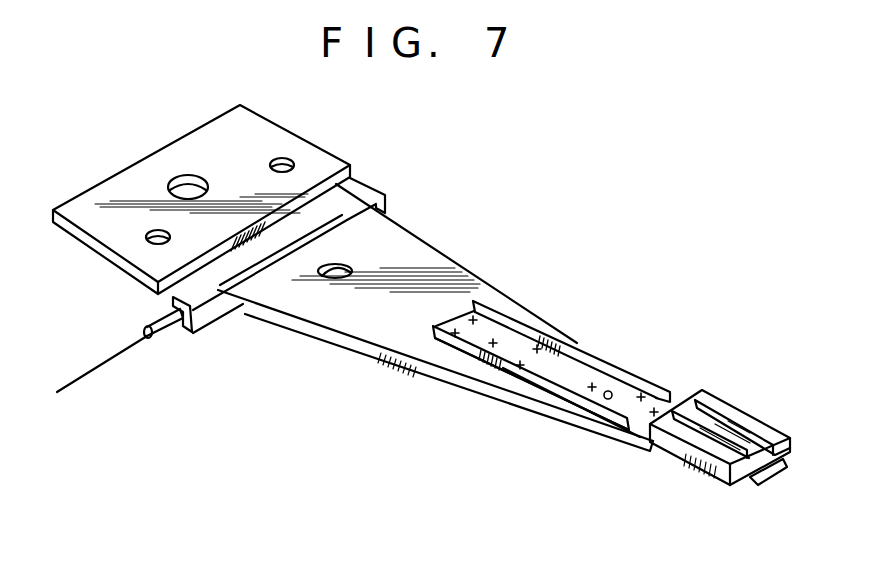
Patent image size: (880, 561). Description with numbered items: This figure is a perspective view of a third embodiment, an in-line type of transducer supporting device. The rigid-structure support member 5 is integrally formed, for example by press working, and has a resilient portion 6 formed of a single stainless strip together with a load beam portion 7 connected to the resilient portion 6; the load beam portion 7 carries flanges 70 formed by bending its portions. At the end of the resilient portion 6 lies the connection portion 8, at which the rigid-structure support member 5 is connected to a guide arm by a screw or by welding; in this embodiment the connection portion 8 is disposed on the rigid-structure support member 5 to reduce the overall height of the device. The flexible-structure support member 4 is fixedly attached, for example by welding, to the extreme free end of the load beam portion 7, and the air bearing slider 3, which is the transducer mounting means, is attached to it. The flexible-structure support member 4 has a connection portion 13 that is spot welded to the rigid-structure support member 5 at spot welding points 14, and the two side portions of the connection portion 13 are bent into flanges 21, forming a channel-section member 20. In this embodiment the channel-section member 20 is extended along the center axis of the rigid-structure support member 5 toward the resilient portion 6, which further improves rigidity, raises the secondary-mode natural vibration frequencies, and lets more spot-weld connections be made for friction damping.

The air bearing slider 3 is at (682, 461).
The flexible-structure support member 4 is at (770, 478).
The rigid-structure support member 5 is at (427, 378).
The resilient portion 6 is at (240, 262).
The load beam portion 7 is at (414, 266).
The connection portion 8 is at (300, 140).
The connection portion 13 is at (548, 392).
The spot welding points 14 is at (655, 392).
The channel-section member 20 is at (565, 370).
The flanges 21 is at (513, 320).
The flanges 70 is at (345, 341).